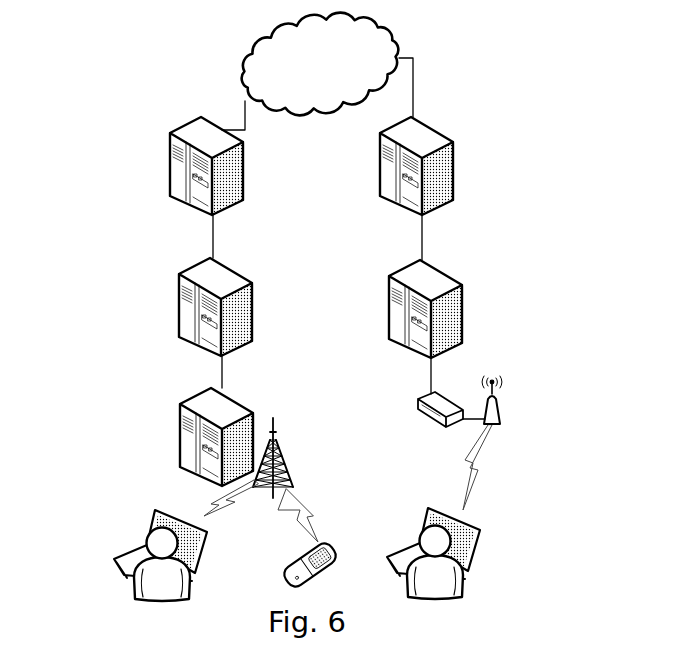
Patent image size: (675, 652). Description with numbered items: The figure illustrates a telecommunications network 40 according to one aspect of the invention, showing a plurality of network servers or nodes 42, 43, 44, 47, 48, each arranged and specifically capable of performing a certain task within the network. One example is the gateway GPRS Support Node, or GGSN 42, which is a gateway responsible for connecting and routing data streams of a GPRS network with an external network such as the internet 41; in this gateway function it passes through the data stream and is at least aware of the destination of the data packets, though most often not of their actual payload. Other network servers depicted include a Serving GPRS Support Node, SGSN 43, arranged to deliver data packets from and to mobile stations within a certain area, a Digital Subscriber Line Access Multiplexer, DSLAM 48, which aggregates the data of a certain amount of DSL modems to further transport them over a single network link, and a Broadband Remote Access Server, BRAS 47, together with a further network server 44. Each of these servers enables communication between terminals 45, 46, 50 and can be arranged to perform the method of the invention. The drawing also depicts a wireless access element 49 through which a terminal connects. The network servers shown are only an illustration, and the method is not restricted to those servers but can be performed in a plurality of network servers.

The telecommunications network 40 is at (117, 84).
The internet 41 is at (250, 62).
The gateway GPRS Support Node (GGSN) 42 is at (170, 166).
The Serving GPRS Support Node (SGSN) 43 is at (178, 322).
The network server 44 is at (178, 445).
The terminal 45 is at (140, 552).
The terminal 46 is at (286, 580).
The Broadband Remote Access Server (BRAS) 47 is at (455, 163).
The Digital Subscriber Line Access Multiplexer (DSLAM) 48 is at (463, 308).
The wireless access point antenna 49 is at (500, 402).
The terminal 50 is at (470, 561).